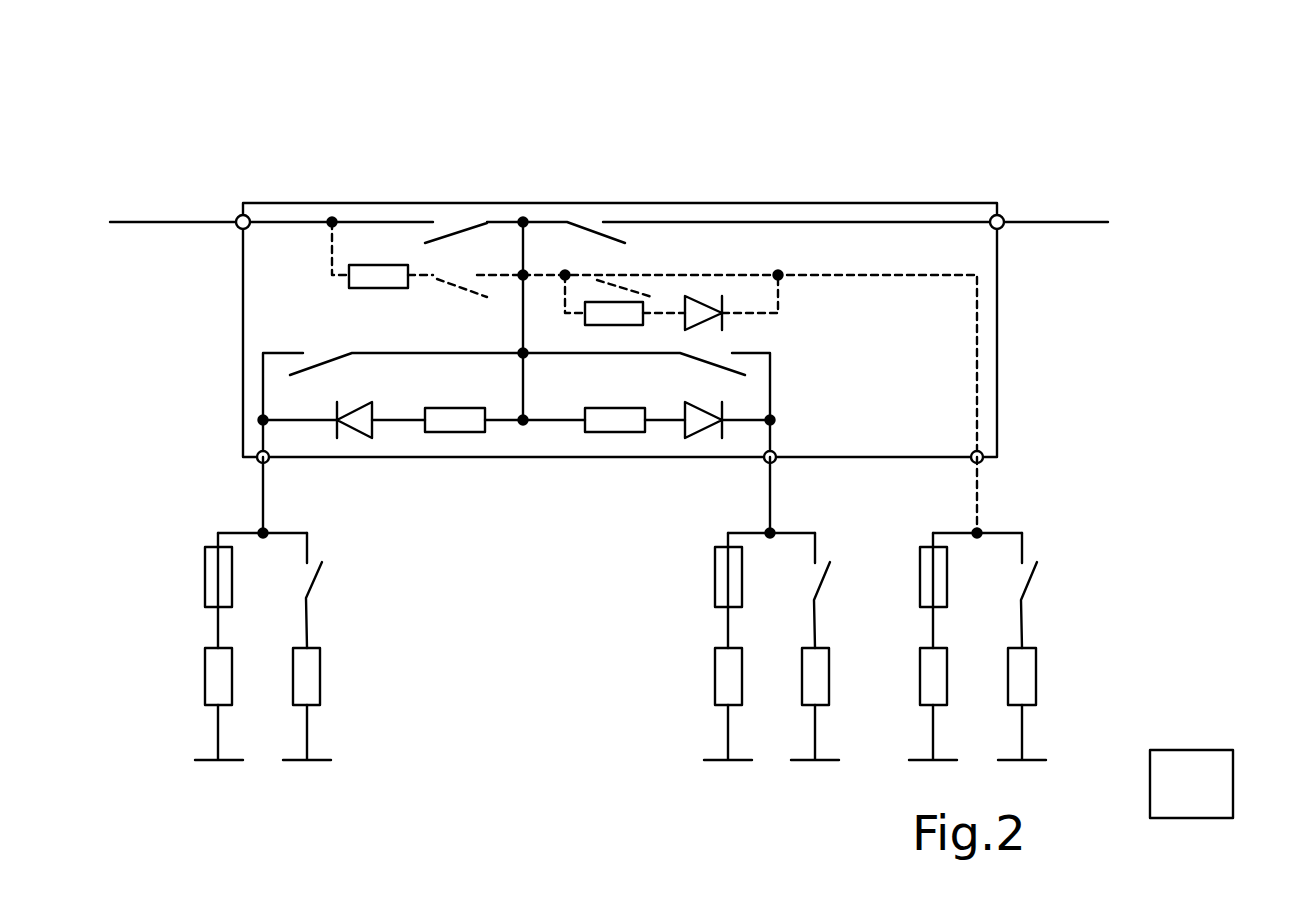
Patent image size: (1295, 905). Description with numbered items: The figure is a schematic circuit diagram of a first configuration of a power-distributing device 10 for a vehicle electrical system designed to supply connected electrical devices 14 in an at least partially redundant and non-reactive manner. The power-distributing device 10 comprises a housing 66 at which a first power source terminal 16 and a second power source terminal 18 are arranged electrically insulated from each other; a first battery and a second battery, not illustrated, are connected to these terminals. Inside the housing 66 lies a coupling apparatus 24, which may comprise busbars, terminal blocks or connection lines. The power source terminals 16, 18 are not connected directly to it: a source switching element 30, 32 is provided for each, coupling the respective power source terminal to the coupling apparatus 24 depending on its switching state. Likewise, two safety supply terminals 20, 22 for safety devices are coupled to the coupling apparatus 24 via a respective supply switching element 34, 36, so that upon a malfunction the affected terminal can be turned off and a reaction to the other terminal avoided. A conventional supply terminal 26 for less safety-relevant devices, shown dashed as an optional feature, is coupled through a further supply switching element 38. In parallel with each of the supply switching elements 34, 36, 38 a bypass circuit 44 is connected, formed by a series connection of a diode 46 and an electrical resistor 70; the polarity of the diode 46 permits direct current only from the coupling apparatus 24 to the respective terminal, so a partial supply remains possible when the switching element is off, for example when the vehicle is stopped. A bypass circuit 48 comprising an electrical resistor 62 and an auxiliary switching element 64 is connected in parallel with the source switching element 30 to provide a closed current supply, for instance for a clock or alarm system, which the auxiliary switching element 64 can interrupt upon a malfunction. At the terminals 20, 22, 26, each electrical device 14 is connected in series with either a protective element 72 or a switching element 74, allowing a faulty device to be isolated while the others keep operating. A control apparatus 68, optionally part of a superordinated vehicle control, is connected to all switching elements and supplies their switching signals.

The power-distributing device 10 is at (912, 172).
The electrical devices 14 is at (204, 680).
The first power source terminal 16 is at (238, 216).
The second power source terminal 18 is at (1003, 215).
The safety supply terminal 20 is at (257, 462).
The safety supply terminal 22 is at (777, 463).
The coupling apparatus 24 is at (446, 311).
The conventional supply terminal 26 is at (983, 463).
The source switching element 30 is at (480, 226).
The source switching element 32 is at (570, 225).
The supply switching element 34 is at (333, 362).
The supply switching element 36 is at (703, 363).
The supply switching element 38 is at (641, 294).
The bypass circuit 44 is at (579, 374).
The diode 46 is at (704, 304).
The bypass circuit 48 is at (305, 240).
The electrical resistor 62 is at (380, 265).
The auxiliary switching element 64 is at (445, 284).
The housing 66 is at (800, 203).
The control apparatus 68 is at (1190, 750).
The electrical resistor 70 is at (614, 311).
The protective element 72 is at (204, 580).
The switching element 74 is at (320, 578).